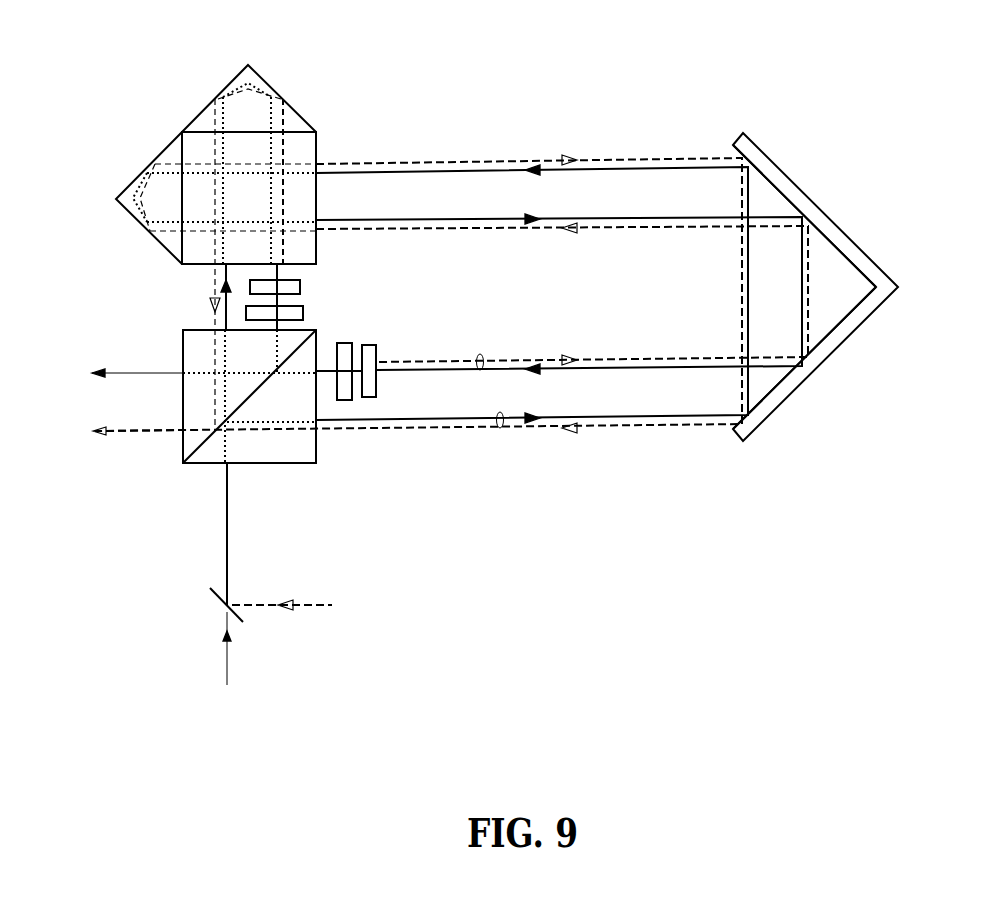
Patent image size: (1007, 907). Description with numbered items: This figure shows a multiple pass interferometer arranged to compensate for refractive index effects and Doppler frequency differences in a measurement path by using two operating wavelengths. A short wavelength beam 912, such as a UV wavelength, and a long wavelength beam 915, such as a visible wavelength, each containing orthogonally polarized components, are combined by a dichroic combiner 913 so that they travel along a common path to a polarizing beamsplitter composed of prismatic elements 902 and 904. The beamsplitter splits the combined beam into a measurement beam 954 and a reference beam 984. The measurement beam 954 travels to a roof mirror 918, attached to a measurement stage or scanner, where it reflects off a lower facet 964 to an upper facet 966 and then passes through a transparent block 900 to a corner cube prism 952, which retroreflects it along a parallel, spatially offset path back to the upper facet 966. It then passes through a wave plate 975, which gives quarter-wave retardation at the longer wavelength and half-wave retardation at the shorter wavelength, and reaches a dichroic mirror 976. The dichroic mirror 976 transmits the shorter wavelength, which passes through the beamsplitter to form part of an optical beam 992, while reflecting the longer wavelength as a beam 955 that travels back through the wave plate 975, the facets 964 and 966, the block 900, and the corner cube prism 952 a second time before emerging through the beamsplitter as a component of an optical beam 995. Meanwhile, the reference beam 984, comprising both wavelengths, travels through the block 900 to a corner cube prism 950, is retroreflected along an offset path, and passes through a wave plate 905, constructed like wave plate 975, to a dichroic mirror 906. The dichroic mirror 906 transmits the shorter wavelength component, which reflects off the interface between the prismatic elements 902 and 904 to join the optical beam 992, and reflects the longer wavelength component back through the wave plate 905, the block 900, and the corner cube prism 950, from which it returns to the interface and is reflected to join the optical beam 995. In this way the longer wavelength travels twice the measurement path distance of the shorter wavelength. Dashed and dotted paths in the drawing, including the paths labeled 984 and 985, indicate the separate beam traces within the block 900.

The transparent block 900 is at (318, 148).
The prismatic element 902 is at (183, 348).
The prismatic element 904 is at (320, 438).
The wave plate 905 is at (300, 287).
The dichroic mirror 906 is at (303, 313).
The short wavelength beam 912 is at (228, 669).
The dichroic combiner 913 is at (215, 588).
The long wavelength beam 915 is at (307, 604).
The beam redirection means 918 is at (764, 152).
The corner cube prism 950 is at (288, 102).
The corner cube prism 952 is at (160, 147).
The measurement beam 954 is at (500, 429).
The beam 955 is at (480, 353).
The lower facet 964 is at (768, 395).
The upper facet 966 is at (771, 182).
The wave plate 975 is at (369, 346).
The dichroic mirror 976 is at (340, 344).
The reference beam 984 is at (214, 112).
The beam path 985 is at (210, 120).
The optical beam 992 is at (107, 379).
The optical beam 995 is at (107, 437).